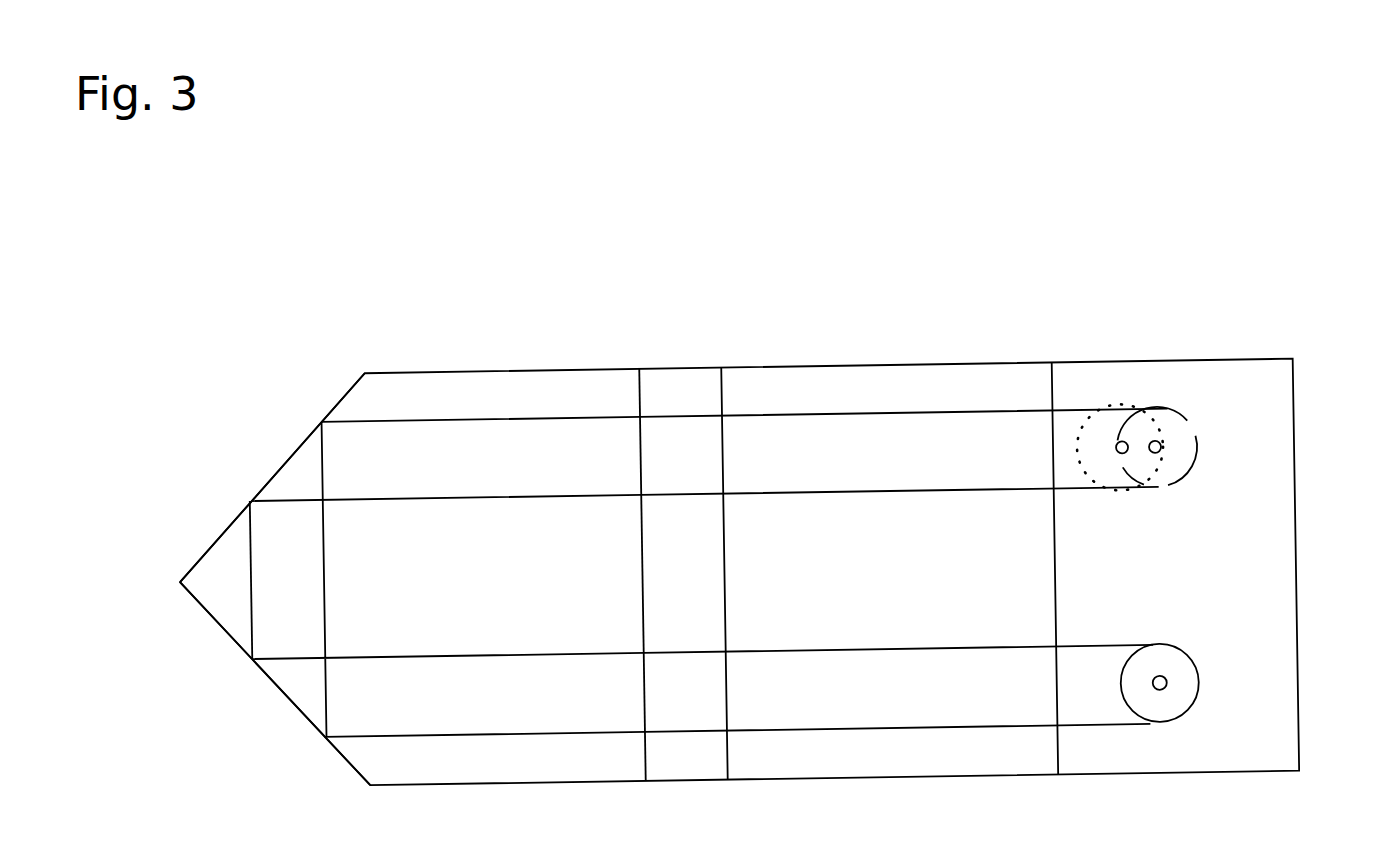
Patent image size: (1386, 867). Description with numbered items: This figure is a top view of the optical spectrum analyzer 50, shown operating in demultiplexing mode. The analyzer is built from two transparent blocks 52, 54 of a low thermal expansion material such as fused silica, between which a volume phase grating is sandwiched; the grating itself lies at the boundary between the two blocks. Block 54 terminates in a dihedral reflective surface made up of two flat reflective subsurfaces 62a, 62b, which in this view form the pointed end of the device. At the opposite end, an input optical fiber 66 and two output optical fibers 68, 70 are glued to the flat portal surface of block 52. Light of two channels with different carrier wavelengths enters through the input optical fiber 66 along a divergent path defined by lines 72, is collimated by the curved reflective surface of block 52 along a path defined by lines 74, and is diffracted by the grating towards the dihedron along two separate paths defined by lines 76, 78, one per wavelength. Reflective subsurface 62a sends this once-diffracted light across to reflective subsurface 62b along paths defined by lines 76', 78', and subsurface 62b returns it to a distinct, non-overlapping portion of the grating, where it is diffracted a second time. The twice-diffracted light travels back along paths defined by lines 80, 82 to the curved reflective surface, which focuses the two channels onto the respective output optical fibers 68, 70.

The optical spectrum analyzer 50 is at (1233, 195).
The transparent block 52 is at (950, 578).
The transparent block 54 is at (506, 572).
The reflective subsurface 62a is at (283, 695).
The reflective subsurface 62b is at (267, 481).
The input optical fiber 66 is at (1152, 688).
The output optical fiber 68 is at (1115, 444).
The output optical fiber 70 is at (1162, 443).
The lines defining divergent optical path 72 is at (1197, 700).
The lines defining collimated optical path 74 is at (798, 651).
The lines defining optical path of wavelength λ1 76 is at (447, 577).
The lines defining optical path of wavelength λ2 78 is at (447, 577).
The lines defining optical path 76' is at (334, 580).
The lines defining optical path 78' is at (334, 580).
The lines defining optical path of twice-diffracted light 80 is at (830, 413).
The lines defining optical path of twice-diffracted light 82 is at (1192, 447).